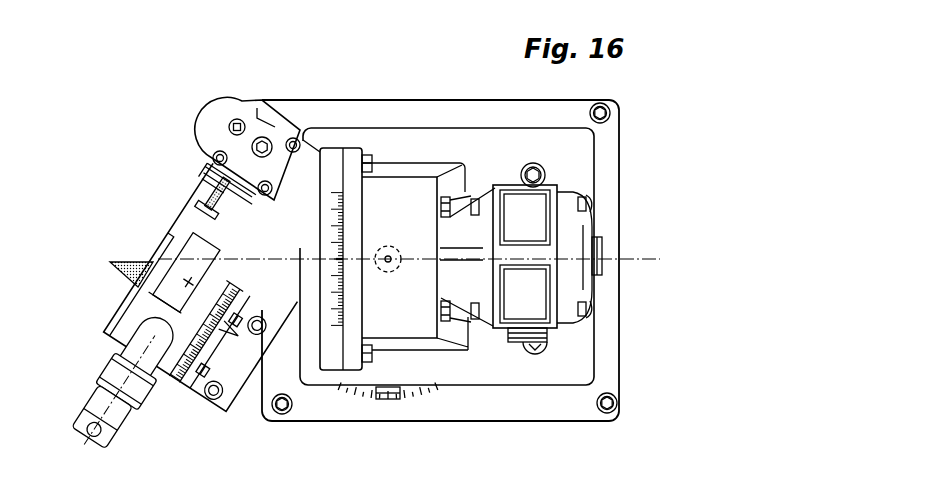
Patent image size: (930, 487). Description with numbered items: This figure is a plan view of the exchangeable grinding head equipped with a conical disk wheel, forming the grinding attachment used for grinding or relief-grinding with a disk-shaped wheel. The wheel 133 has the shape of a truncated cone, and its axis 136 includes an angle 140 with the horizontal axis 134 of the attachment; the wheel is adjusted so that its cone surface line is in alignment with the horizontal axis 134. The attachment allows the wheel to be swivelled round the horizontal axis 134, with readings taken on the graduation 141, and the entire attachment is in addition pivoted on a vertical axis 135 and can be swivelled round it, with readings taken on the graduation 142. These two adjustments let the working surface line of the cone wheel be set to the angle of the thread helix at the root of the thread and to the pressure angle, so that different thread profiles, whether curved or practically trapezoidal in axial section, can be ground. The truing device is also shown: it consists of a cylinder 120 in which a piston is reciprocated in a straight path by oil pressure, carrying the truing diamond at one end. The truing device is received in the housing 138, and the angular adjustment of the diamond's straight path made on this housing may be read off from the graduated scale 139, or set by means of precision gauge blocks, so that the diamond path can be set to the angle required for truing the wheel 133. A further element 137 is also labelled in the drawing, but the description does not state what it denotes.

The cylinder 120 is at (143, 331).
The wheel 133 is at (133, 262).
The horizontal axis 134 is at (425, 263).
The vertical axis 135 is at (391, 250).
The axis of the grinding wheel 136 is at (186, 286).
The angle scale plate 137 is at (250, 208).
The housing 138 is at (104, 331).
The graduated scale 139 is at (209, 349).
The angle 140 is at (190, 280).
The graduation 141 is at (348, 242).
The graduation 142 is at (393, 406).